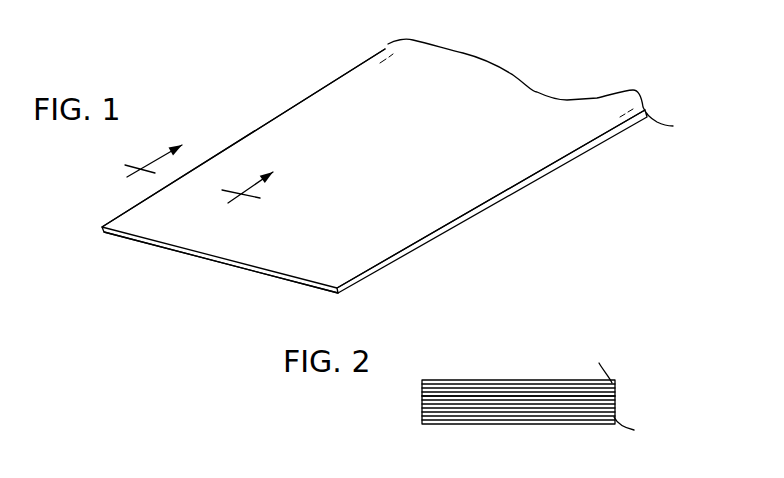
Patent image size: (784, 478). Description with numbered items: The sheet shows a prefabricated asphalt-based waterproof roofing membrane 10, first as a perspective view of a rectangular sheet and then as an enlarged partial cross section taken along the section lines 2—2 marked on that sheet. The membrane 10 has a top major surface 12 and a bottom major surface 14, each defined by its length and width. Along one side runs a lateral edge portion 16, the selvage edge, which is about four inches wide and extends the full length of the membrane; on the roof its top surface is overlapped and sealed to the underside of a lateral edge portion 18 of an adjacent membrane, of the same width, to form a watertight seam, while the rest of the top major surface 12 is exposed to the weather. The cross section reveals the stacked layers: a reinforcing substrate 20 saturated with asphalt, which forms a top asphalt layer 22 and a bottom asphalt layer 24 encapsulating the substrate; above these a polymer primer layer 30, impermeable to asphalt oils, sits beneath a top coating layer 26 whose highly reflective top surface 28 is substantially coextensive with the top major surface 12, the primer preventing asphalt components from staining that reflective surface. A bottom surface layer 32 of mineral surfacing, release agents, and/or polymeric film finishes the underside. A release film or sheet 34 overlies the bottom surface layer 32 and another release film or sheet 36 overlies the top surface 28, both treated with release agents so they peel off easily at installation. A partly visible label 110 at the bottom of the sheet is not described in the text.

In FIG. 1, the prefabricated asphalt-based waterproof roofing membrane 10 is at (267, 72).
In FIG. 2, the prefabricated asphalt-based waterproof roofing membrane 10 is at (645, 310).
In FIG. 1, the top major surface 12 is at (397, 157).
In FIG. 1, the bottom major surface 14 is at (248, 271).
In FIG. 1, the lateral edge portion 16 is at (273, 138).
In FIG. 1, the lateral edge portion of adjacent membrane 18 is at (460, 207).
In FIG. 1, the section lines 2— 2 is at (190, 182).
In FIG. 2, the reinforcing substrate 20 is at (422, 404).
In FIG. 2, the top asphalt layer 22 is at (422, 400).
In FIG. 2, the bottom asphalt layer 24 is at (422, 412).
In FIG. 2, the top coating layer 26 is at (462, 390).
In FIG. 2, the highly reflective top surface 28 is at (502, 387).
In FIG. 2, the polymer primer layer 30 is at (549, 395).
In FIG. 2, the bottom surface layer 32 is at (560, 413).
In FIG. 2, the release film or sheet 34 is at (489, 420).
In FIG. 2, the release film or sheet 36 is at (435, 383).
In FIG. 2, the laminate (FIG. 3 fragment) 110 is at (230, 477).